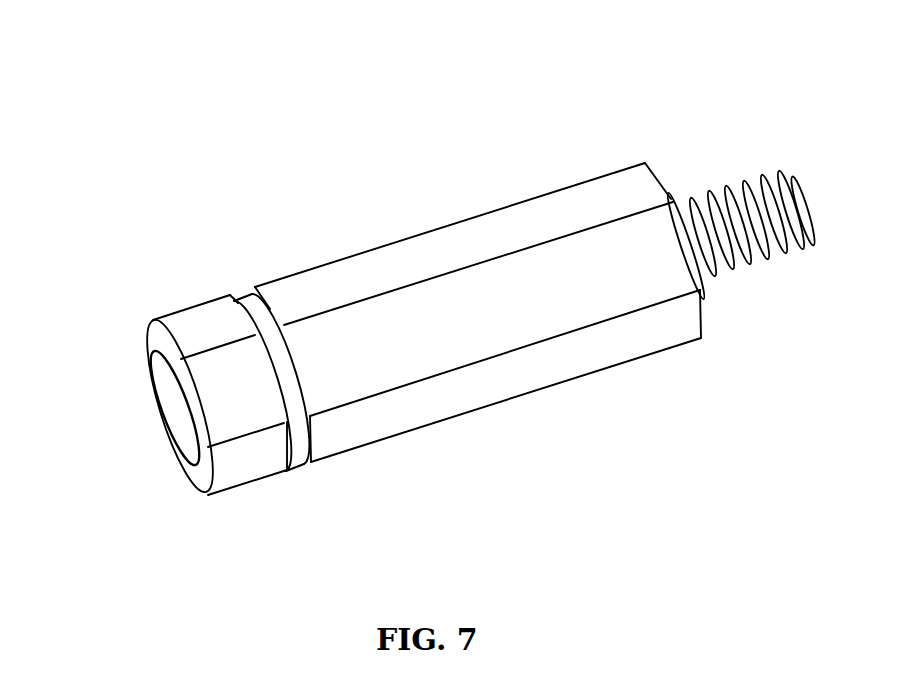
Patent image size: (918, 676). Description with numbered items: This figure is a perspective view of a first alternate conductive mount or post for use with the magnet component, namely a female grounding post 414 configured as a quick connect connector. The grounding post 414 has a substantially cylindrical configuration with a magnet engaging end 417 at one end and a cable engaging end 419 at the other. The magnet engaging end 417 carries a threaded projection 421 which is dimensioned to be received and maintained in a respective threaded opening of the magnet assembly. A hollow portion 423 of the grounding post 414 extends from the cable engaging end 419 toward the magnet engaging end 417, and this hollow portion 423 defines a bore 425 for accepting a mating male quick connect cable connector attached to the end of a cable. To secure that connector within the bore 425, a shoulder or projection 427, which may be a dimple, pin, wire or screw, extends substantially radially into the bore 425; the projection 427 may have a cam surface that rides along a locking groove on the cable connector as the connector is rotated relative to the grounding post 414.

The female grounding post 414 is at (481, 102).
The magnet engaging end 417 is at (702, 317).
The cable engaging end 419 is at (163, 453).
The threaded projection 421 is at (730, 185).
The hollow portion 423 is at (310, 292).
The bore 425 is at (172, 393).
The shoulder or projection 427 is at (297, 458).